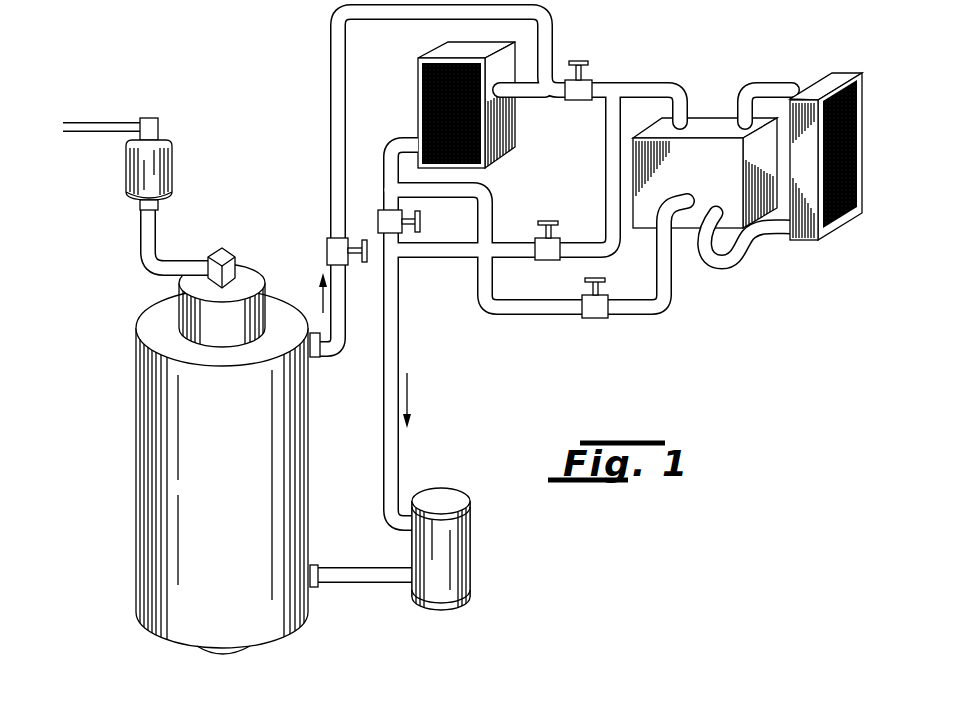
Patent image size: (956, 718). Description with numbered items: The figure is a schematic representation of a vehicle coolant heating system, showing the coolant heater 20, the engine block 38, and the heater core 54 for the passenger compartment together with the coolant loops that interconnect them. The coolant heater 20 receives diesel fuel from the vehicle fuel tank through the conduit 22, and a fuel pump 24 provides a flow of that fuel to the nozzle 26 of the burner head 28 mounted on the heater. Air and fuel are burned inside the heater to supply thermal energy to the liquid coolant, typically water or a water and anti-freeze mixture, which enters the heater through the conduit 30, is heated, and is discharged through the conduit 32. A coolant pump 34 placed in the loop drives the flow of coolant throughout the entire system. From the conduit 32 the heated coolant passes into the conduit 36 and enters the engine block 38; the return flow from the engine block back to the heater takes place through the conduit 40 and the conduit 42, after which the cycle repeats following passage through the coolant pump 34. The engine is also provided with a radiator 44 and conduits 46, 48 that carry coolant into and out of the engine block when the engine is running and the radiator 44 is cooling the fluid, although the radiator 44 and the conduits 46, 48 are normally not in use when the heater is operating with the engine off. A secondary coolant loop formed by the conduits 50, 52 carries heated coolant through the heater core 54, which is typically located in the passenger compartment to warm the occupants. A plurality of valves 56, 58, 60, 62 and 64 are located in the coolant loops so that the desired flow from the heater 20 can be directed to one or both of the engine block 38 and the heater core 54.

The coolant heater 20 is at (128, 467).
The conduit 22 is at (15, 130).
The fuel pump 24 is at (170, 167).
The nozzle 26 is at (220, 260).
The burner head 28 is at (248, 270).
The conduit 30 is at (377, 592).
The conduit 32 is at (330, 345).
The coolant pump 34 is at (460, 549).
The conduit 36 is at (645, 88).
The engine block 38 is at (710, 127).
The conduit 40 is at (653, 308).
The conduit 42 is at (397, 311).
The radiator 44 is at (840, 78).
The conduit 46 is at (778, 87).
The conduit 48 is at (740, 253).
The conduit 50 is at (527, 95).
The conduit 52 is at (403, 143).
The heater core 54 is at (433, 53).
The valve 56 is at (327, 247).
The valve 58 is at (378, 220).
The valve 60 is at (587, 83).
The valve 62 is at (557, 243).
The valve 64 is at (597, 318).